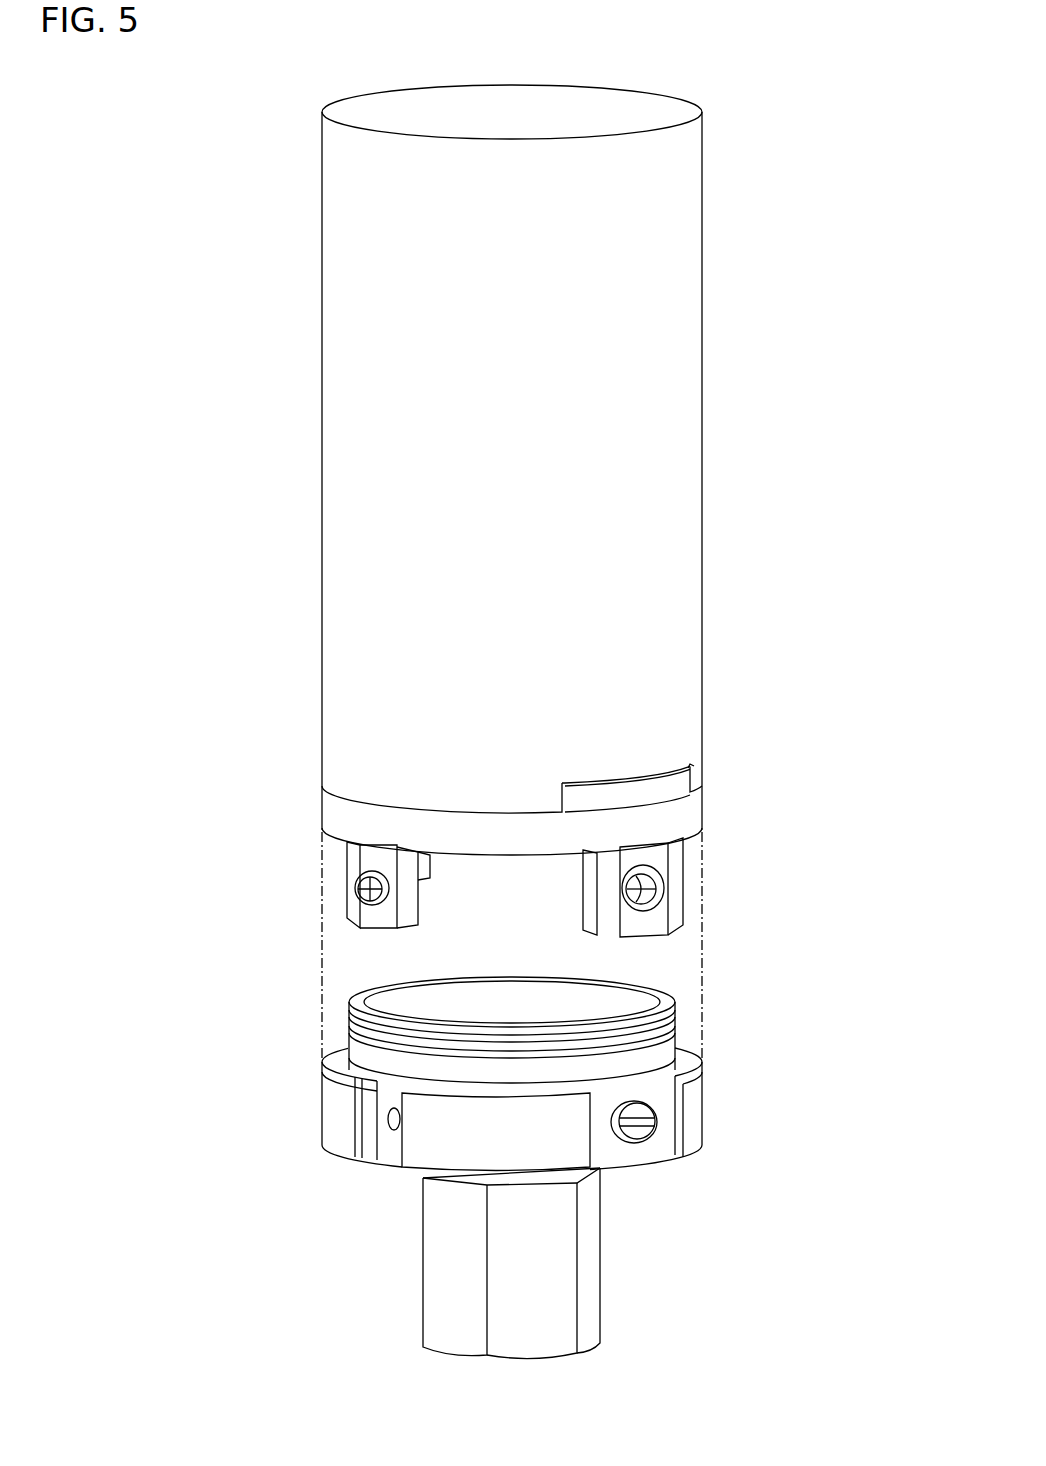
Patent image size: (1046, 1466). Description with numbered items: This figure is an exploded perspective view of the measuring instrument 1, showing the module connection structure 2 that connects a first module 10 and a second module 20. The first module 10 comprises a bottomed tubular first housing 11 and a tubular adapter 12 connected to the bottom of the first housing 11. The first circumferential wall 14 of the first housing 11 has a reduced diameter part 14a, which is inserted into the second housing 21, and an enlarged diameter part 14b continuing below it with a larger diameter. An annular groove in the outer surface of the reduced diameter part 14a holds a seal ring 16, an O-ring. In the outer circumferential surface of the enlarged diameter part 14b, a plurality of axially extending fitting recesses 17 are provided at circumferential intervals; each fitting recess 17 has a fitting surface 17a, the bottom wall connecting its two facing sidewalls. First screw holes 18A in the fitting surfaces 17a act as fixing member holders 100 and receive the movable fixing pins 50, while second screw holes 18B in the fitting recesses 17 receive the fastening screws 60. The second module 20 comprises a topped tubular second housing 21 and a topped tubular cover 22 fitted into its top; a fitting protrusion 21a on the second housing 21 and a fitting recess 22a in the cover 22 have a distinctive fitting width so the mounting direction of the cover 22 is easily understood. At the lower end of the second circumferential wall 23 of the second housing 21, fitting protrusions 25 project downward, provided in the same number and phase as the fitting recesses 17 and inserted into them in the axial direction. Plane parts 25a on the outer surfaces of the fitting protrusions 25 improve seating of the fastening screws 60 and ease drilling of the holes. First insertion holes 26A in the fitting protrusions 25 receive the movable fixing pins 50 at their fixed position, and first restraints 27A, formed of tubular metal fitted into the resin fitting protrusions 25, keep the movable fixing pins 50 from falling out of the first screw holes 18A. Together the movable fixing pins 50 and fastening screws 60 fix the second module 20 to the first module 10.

The measuring instrument 1 is at (305, 124).
The module connection structure 2 is at (285, 1010).
The first module 10 is at (242, 1248).
The first housing 11 is at (410, 1176).
The adapter 12 is at (420, 1278).
The first circumferential wall 14 is at (832, 1037).
The reduced diameter part 14a is at (673, 1048).
The enlarged diameter part 14b is at (700, 1123).
The seal ring 16 is at (668, 1028).
The fitting recesses 17 is at (387, 1147).
The fitting surfaces 17a is at (514, 1161).
The first screw holes 18A is at (643, 1142).
The second screw holes 18B is at (390, 1115).
The second module 20 is at (196, 668).
The second housing 21 is at (321, 812).
The fitting protrusion 21a is at (670, 766).
The cover 22 is at (321, 710).
The fitting recess 22a is at (640, 788).
The second circumferential wall 23 is at (687, 810).
The fitting protrusions 25 is at (350, 912).
The plane parts 25a is at (360, 860).
The first insertion holes 26A is at (659, 889).
The first restraints 27A is at (652, 863).
The movable fixing pins 50 is at (653, 1128).
The fastening screws 60 is at (358, 872).
The fixing member holders 100 is at (634, 1122).